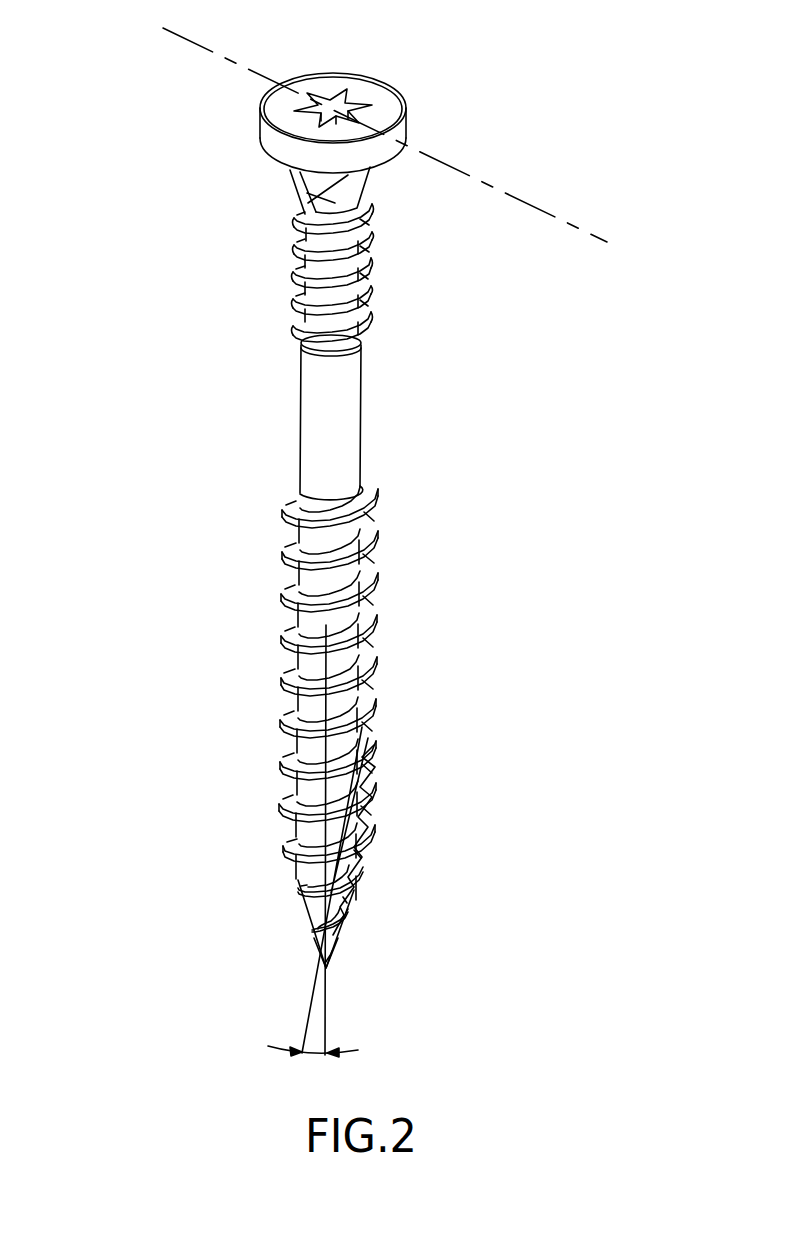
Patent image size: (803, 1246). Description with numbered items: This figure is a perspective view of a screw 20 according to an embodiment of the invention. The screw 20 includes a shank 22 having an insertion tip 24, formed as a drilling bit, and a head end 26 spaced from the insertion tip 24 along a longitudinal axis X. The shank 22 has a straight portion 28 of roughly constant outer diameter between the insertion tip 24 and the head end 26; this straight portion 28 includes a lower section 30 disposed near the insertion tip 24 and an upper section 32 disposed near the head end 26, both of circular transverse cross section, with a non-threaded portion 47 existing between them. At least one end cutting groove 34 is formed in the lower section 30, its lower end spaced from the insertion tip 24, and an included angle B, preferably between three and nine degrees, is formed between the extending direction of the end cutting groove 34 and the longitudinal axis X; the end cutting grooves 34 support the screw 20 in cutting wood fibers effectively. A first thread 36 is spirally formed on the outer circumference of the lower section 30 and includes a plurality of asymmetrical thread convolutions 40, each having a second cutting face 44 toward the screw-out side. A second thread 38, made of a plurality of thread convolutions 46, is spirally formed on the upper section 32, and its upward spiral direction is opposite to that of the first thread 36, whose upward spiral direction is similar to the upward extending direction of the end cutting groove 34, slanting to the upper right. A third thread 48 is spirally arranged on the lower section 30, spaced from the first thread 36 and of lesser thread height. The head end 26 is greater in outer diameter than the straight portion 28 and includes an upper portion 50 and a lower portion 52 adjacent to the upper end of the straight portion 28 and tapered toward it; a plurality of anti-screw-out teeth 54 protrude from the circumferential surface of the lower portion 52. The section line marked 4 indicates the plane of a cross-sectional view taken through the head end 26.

The screw 20 is at (179, 559).
The shank 22 is at (305, 648).
The insertion tip 24 is at (340, 958).
The head end 26 is at (404, 100).
The straight portion 28 is at (348, 455).
The lower section 30 is at (290, 748).
The upper section 32 is at (307, 278).
The end cutting groove 34 is at (367, 797).
The first thread 36 is at (363, 707).
The second thread 38 is at (360, 240).
The thread convolutions 40 is at (375, 620).
The second cutting face 44 is at (362, 543).
The thread convolutions 46 is at (357, 328).
The non-threaded portion 47 is at (347, 402).
The third thread 48 is at (357, 570).
The upper portion 50 is at (277, 145).
The lower portion 52 is at (302, 186).
The anti-screw-out teeth 54 is at (352, 188).
The longitudinal axis X is at (360, 848).
The included angle B is at (313, 1042).
The section line 4- 4 is at (156, 65).